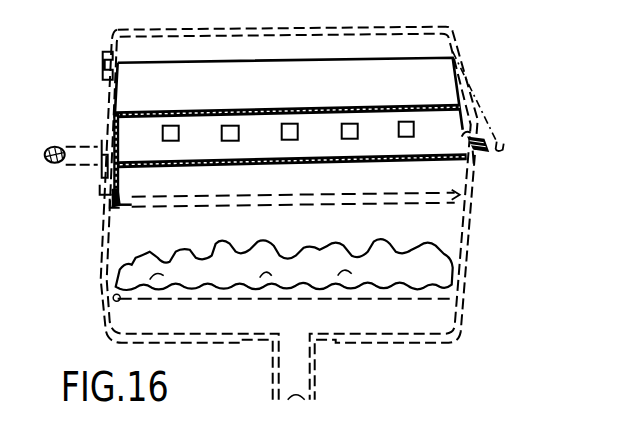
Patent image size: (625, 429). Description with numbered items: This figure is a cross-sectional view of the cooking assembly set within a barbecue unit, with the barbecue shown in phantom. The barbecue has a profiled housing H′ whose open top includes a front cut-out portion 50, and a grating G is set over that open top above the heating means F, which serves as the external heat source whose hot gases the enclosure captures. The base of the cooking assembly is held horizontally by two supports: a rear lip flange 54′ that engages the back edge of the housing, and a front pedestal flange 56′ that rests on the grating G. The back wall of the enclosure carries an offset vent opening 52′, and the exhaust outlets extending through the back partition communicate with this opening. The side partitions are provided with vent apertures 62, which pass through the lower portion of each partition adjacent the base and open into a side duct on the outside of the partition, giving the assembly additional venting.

The front cut-out portion 50 is at (198, 187).
The offset vent opening 52′ is at (491, 155).
The rear lip flange 54′ is at (454, 147).
The front pedestal flange 56′ is at (102, 185).
The vent apertures 62 is at (402, 152).
The heating means F is at (254, 232).
The grating G is at (348, 207).
The profiled housing H′ is at (464, 248).